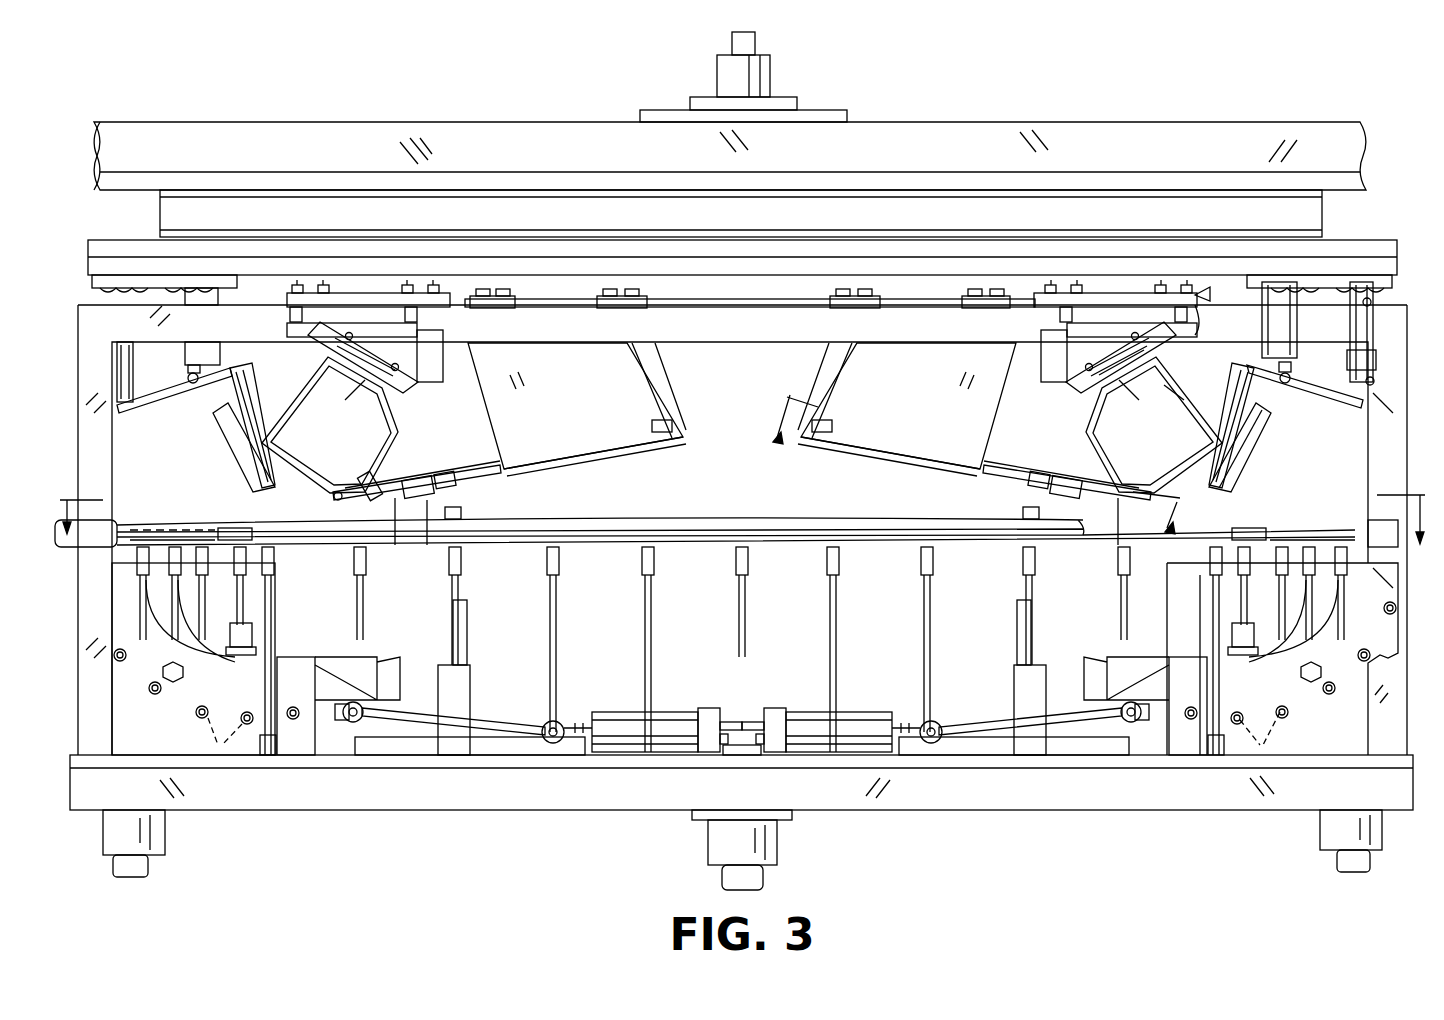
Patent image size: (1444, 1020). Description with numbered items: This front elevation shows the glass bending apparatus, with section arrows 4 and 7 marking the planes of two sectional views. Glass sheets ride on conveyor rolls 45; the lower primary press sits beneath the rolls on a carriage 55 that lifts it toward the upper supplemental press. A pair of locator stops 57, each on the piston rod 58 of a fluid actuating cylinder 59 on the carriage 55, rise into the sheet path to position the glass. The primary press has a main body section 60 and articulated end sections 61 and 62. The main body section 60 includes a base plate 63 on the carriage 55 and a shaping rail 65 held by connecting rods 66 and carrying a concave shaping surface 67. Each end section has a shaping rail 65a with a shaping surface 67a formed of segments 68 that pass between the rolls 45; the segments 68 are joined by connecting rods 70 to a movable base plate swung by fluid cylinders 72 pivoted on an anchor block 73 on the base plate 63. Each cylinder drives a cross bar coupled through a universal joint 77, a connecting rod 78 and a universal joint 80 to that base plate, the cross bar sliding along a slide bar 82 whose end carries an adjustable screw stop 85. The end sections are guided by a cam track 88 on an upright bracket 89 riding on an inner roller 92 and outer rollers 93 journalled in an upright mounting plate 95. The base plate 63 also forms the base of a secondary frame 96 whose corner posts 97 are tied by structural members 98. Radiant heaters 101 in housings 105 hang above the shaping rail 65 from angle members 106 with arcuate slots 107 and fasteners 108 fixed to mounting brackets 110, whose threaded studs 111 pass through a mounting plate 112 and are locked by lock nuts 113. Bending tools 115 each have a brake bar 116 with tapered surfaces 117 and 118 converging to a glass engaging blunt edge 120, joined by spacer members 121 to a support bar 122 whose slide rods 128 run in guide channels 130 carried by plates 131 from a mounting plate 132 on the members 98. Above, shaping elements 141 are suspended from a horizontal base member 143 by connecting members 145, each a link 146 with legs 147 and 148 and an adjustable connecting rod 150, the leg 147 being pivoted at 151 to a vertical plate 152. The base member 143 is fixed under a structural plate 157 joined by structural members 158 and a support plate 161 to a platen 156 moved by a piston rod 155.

The section line 4- 4 is at (738, 499).
The section line 7- 7 is at (982, 449).
The conveyor rolls 45 is at (567, 520).
The carriage 55 is at (663, 795).
The locator stops 57 is at (463, 508).
The piston rod 58 is at (465, 578).
The fluid actuating cylinder 59 is at (470, 655).
The main body section 60 is at (618, 532).
The end section 61 is at (1340, 510).
The end section 62 is at (200, 518).
The base plate 63 is at (422, 763).
The shaping rail 65 is at (700, 548).
The shaping rail 65a is at (1215, 560).
The connecting rods 66 is at (646, 610).
The shaping surface 67 is at (754, 537).
The shaping surface 67a is at (232, 527).
The segments 68 is at (240, 527).
The connecting rods 70 is at (237, 650).
The fluid cylinders 72 is at (788, 712).
The anchor block 73 is at (745, 752).
The universal joint 77 is at (547, 740).
The connecting rod 78 is at (483, 725).
The universal joint 80 is at (352, 723).
The slide bar 82 is at (577, 748).
The adjustable screw stop 85 is at (615, 723).
The cam track 88 is at (325, 658).
The upright bracket 89 is at (395, 670).
The inner roller 92 is at (167, 665).
The outer rollers 93 is at (218, 752).
The mounting plate 95 is at (128, 730).
The secondary frame 96 is at (1402, 286).
The corner posts 97 is at (90, 373).
The structural members 98 is at (580, 330).
The radiant heaters 101 is at (300, 357).
The housing 105 is at (1212, 395).
The angle members 106 is at (335, 330).
The arcuate slots 107 is at (1092, 330).
The fasteners 108 is at (1115, 357).
The mounting brackets 110 is at (443, 340).
The threaded studs 111 is at (320, 288).
The mounting plate 112 is at (425, 293).
The lock nuts 113 is at (1200, 302).
The bending tools 115 is at (418, 457).
The brake bar 116 is at (395, 548).
The tapered surface 117 is at (370, 490).
The tapered surface 118 is at (335, 542).
The glass engaging blunt edge 120 is at (340, 498).
The spacer members 121 is at (367, 475).
The support bar 122 is at (427, 548).
The slide rods 128 is at (430, 477).
The guide channels 130 is at (665, 425).
The plates 131 is at (658, 352).
The mounting plate 132 is at (810, 299).
The shaping elements 141 is at (230, 450).
The horizontal base member 143 is at (135, 280).
The connecting members 145 is at (275, 427).
The link 146 is at (1302, 400).
The leg 147 is at (148, 408).
The leg 148 is at (250, 415).
The connecting rod 150 is at (1350, 345).
The pivot 151 is at (186, 376).
The vertical plate 152 is at (206, 295).
The piston rod 155 is at (733, 42).
The platen 156 is at (880, 130).
The structural plate 157 is at (773, 248).
The structural members 158 is at (623, 208).
The support plate 161 is at (127, 180).